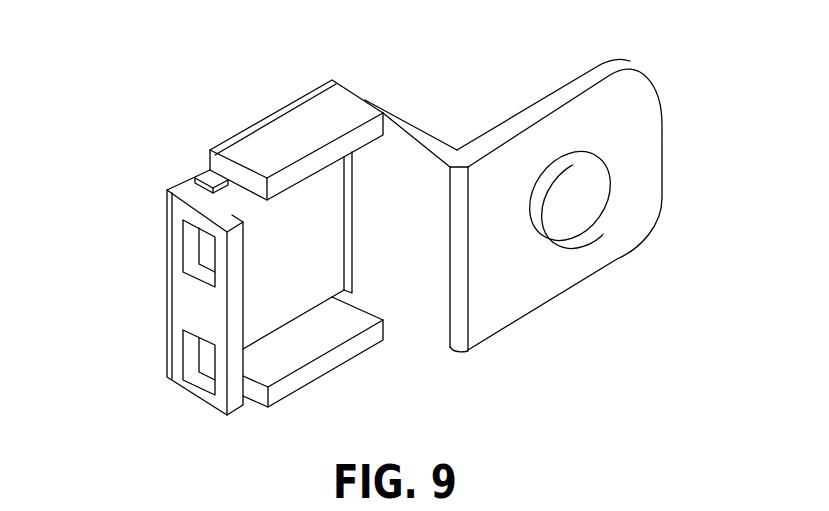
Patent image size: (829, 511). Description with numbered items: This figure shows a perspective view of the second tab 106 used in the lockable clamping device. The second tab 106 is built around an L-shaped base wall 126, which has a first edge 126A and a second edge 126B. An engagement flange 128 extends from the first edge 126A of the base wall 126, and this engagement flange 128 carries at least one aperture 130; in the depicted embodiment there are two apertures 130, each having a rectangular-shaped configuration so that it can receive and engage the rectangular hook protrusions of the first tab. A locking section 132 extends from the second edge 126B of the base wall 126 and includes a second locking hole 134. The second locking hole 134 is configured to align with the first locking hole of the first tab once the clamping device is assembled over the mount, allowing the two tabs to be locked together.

The second tab 106 is at (238, 35).
The L-shaped base wall 126 is at (307, 217).
The first edge 126A is at (167, 214).
The second edge 126B is at (453, 185).
The engagement flange 128 is at (187, 308).
The aperture 130 is at (187, 260).
The locking section 132 is at (637, 118).
The second locking hole 134 is at (598, 193).